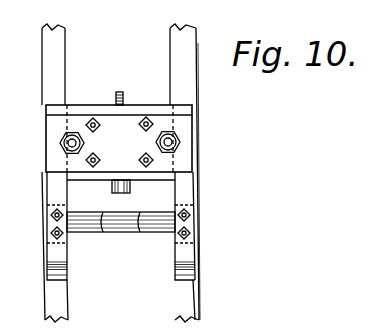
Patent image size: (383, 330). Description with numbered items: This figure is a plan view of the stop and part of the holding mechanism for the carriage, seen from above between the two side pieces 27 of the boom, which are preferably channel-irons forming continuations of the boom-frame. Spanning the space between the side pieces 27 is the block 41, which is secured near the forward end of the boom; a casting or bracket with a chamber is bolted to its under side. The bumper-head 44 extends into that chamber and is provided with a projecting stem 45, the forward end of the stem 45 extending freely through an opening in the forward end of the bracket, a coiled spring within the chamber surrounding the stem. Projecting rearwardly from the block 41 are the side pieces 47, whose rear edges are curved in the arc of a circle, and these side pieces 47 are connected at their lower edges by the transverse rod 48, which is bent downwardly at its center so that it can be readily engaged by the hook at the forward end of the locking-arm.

The side pieces 27 is at (45, 302).
The block 41 is at (81, 108).
The bumper-head 44 is at (122, 193).
The stem 45 is at (123, 102).
The side pieces 47 is at (55, 253).
The transverse rod 48 is at (102, 232).